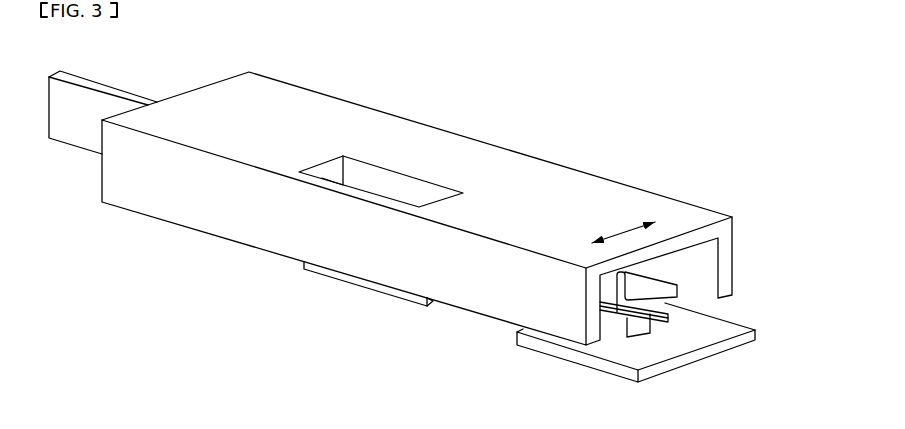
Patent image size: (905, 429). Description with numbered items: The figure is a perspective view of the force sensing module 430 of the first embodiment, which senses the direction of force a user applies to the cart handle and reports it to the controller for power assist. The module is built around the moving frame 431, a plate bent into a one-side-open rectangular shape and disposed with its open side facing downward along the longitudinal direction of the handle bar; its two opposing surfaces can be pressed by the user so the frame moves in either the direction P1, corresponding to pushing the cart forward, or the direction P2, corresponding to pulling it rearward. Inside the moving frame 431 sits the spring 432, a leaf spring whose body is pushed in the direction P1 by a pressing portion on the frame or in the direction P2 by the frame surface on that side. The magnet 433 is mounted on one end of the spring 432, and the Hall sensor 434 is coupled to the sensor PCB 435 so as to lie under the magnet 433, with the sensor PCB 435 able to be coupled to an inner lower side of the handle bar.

The force sensing module 430 is at (743, 101).
The moving frame 431 is at (638, 202).
The spring 432 is at (657, 282).
The magnet 433 is at (668, 313).
The Hall sensor 434 is at (650, 333).
The sensor PCB 435 is at (700, 333).
The direction of force for front movement P1 is at (248, 223).
The direction of force for rear movement P2 is at (502, 138).